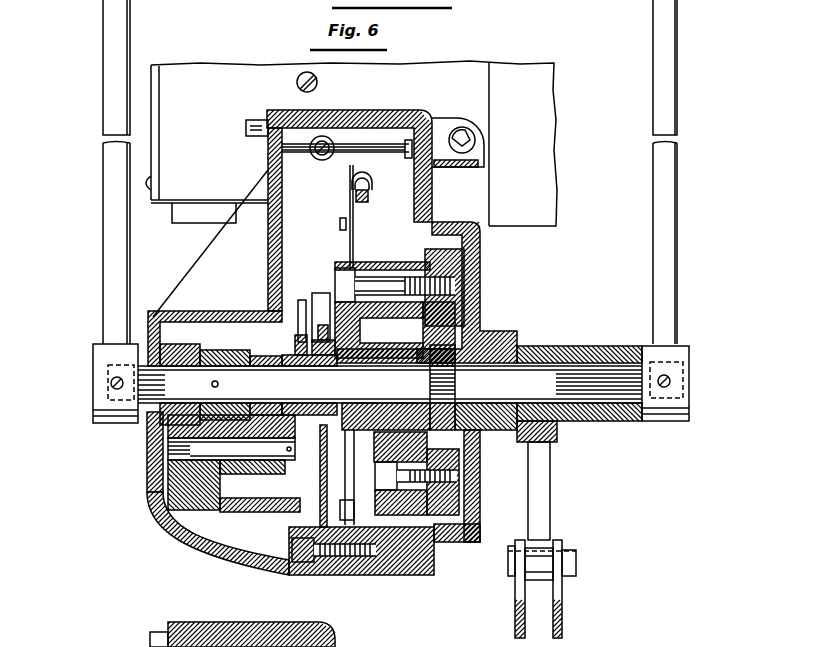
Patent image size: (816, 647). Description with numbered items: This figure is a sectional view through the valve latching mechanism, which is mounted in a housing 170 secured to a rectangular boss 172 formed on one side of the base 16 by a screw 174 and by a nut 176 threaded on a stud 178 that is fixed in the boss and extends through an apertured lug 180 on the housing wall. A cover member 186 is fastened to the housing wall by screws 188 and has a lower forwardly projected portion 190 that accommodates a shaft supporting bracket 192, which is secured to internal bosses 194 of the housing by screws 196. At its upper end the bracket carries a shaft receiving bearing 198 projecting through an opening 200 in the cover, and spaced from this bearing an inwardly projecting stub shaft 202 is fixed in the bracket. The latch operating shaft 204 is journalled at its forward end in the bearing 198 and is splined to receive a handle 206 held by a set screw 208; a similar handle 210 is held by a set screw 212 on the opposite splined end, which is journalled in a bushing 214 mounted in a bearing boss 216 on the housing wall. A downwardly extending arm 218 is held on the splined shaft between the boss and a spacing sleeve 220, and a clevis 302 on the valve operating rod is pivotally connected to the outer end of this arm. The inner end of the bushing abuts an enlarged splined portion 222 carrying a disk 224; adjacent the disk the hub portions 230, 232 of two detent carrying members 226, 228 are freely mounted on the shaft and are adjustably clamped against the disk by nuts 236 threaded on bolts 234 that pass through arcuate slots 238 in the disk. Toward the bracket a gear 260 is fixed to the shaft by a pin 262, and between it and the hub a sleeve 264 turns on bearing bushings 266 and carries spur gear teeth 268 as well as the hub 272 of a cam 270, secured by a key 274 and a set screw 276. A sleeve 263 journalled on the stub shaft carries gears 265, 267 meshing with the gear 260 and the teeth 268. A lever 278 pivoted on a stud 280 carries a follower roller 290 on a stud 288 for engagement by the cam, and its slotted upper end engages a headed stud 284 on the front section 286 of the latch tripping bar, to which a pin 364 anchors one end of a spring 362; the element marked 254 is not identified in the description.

The base 16 is at (556, 104).
The housing 170 is at (432, 188).
The rectangular boss 172 is at (492, 200).
The screw 174 is at (305, 72).
The nut 176 is at (462, 127).
The stud 178 is at (484, 140).
The apertured lug 180 is at (436, 119).
The cover member 186 is at (268, 250).
The screws 188 is at (258, 118).
The lower forwardly projected portion 190 is at (148, 466).
The shaft supporting bracket 192 is at (268, 538).
The internal bosses 194 is at (378, 578).
The screws 196 is at (312, 576).
The shaft receiving bearing 198 is at (147, 430).
The opening 200 is at (155, 318).
The stub shaft 202 is at (160, 446).
The latch operating shaft 204 is at (282, 383).
The handle 206 is at (103, 237).
The set screw 208 is at (93, 382).
The handle 210 is at (677, 262).
The set screw 212 is at (689, 381).
The bushing 214 is at (560, 346).
The bearing boss 216 is at (470, 446).
The arm 218 is at (550, 470).
The spacing sleeve 220 is at (612, 440).
The enlarged splined portion 222 is at (432, 381).
The disk 224 is at (480, 322).
The detent carrying member 226 is at (400, 268).
The detent carrying member 228 is at (392, 518).
The hub portion 230 is at (365, 410).
The hub portion 232 is at (432, 414).
The bolts 234 is at (372, 285).
The nuts 236 is at (465, 270).
The arcuate slots 238 is at (422, 330).
The shaft end 254 is at (318, 155).
The gear 260 is at (180, 373).
The pin 262 is at (212, 388).
The sleeve 263 is at (234, 486).
The sleeve 264 is at (241, 371).
The gear 265 is at (272, 470).
The bearing bushings 266 is at (318, 360).
The gear 267 is at (262, 545).
The spur gear teeth 268 is at (272, 312).
The cam 270 is at (320, 470).
The hub 272 is at (231, 437).
The key 274 is at (290, 404).
The set screw 276 is at (270, 300).
The lever 278 is at (352, 185).
The stud 280 is at (350, 562).
The headed stud 284 is at (350, 212).
The front section 286 is at (370, 188).
The stud 288 is at (300, 335).
The follower roller 290 is at (322, 293).
The clevis 302 is at (562, 600).
The spring 362 is at (360, 143).
The pin 364 is at (340, 225).